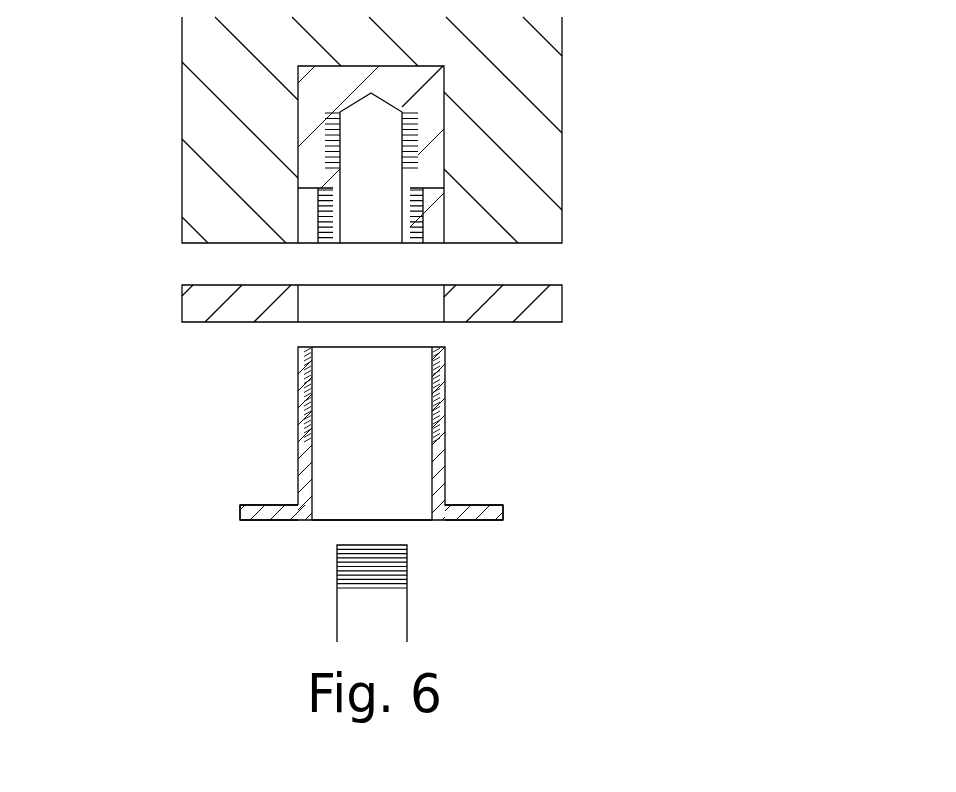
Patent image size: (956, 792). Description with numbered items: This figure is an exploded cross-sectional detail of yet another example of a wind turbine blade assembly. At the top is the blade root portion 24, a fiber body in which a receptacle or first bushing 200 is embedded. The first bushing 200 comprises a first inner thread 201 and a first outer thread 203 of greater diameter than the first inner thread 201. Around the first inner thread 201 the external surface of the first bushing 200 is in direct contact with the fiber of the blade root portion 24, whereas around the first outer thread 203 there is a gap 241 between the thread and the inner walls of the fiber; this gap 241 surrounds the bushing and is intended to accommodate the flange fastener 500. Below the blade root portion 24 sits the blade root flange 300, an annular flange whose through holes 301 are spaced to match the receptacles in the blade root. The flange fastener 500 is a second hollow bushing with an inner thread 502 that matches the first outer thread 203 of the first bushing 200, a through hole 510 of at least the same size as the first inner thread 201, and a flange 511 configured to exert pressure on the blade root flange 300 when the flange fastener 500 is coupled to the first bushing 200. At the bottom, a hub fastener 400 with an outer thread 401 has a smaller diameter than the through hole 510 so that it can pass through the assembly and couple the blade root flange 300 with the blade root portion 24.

The blade root portion 24 is at (550, 27).
The first bushing 200 is at (446, 75).
The first inner thread 201 is at (426, 128).
The first outer thread 203 is at (425, 196).
The gap 241 is at (310, 238).
The blade root flange 300 is at (178, 307).
The through hole 301 is at (345, 307).
The flange fastener 500 is at (230, 452).
The inner thread 502 is at (435, 397).
The through hole 510 is at (382, 510).
The flange 511 is at (280, 509).
The hub fastener 400 is at (427, 620).
The outer thread 401 is at (333, 578).